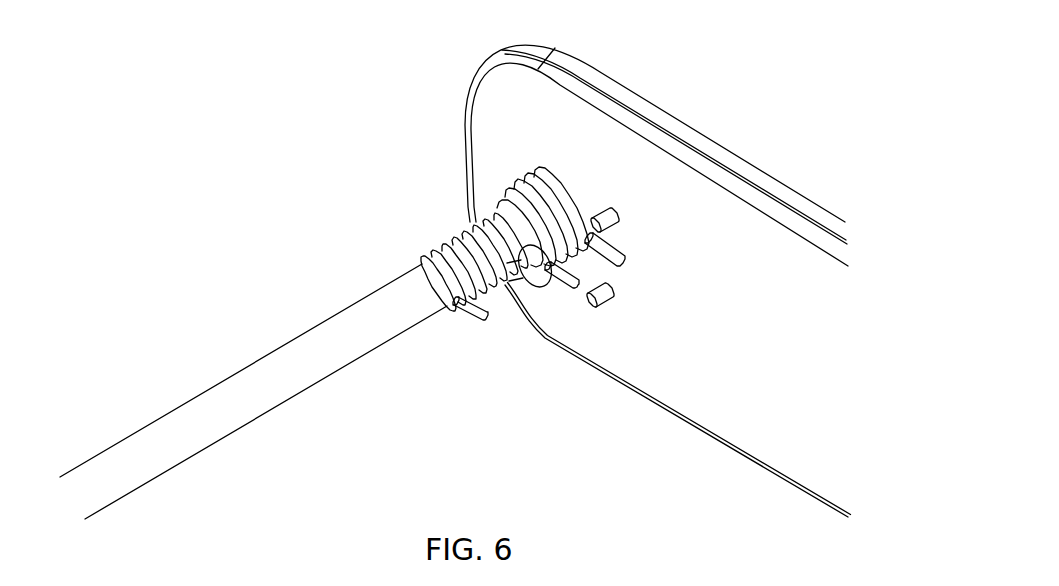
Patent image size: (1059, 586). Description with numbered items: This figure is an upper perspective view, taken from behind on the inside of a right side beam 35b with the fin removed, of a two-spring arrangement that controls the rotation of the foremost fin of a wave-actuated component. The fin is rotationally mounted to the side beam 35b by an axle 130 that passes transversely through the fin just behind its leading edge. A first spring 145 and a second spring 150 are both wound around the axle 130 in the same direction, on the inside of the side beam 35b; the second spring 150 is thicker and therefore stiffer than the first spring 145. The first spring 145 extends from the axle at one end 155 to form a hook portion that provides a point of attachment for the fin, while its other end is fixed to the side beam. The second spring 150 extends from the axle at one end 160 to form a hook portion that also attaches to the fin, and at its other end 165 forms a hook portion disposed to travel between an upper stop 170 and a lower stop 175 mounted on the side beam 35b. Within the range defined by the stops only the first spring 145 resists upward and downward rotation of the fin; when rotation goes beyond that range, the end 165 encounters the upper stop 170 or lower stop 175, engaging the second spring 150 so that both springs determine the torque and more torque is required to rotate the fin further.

The side beam 35b is at (703, 195).
The axle 130 is at (375, 333).
The first spring 145 is at (454, 232).
The second spring 150 is at (508, 178).
The end of first spring 155 is at (487, 318).
The end of second spring 160 is at (577, 298).
The other end of second spring 165 is at (625, 258).
The upper stop 170 is at (608, 212).
The lower stop 175 is at (615, 294).